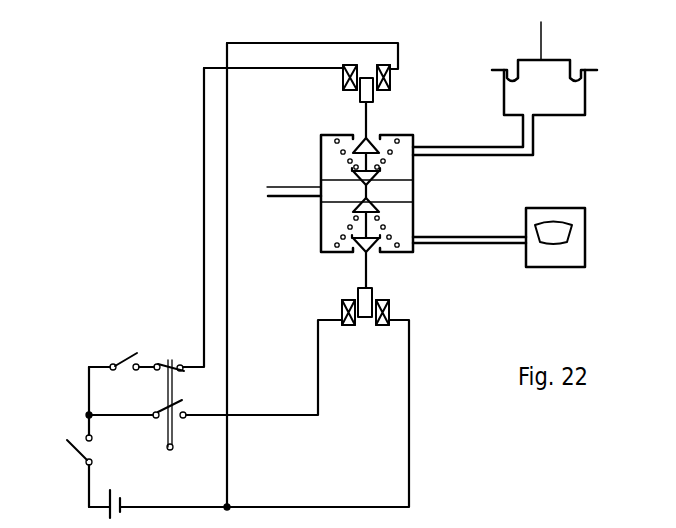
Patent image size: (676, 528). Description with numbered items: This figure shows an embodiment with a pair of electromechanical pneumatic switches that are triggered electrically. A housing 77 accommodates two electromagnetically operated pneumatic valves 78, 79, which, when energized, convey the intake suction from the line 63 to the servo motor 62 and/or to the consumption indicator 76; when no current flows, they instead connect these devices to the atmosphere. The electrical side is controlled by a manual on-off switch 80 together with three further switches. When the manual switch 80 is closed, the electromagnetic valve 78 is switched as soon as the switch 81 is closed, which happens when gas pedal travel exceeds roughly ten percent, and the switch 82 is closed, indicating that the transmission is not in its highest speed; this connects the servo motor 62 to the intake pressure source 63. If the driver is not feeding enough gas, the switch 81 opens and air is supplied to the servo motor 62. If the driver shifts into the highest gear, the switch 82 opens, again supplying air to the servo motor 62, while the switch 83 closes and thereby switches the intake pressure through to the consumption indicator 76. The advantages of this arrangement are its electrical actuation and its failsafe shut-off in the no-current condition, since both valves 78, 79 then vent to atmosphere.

The servo motor 62 is at (585, 113).
The line 63 is at (268, 197).
The consumption indicator 76 is at (586, 250).
The housing 77 is at (413, 191).
The electromagnetic valve 78 is at (367, 115).
The electromagnetic valve 79 is at (367, 264).
The manual switch 80 is at (93, 470).
The switch 81 is at (126, 354).
The switch 82 is at (170, 360).
The switch 83 is at (164, 406).